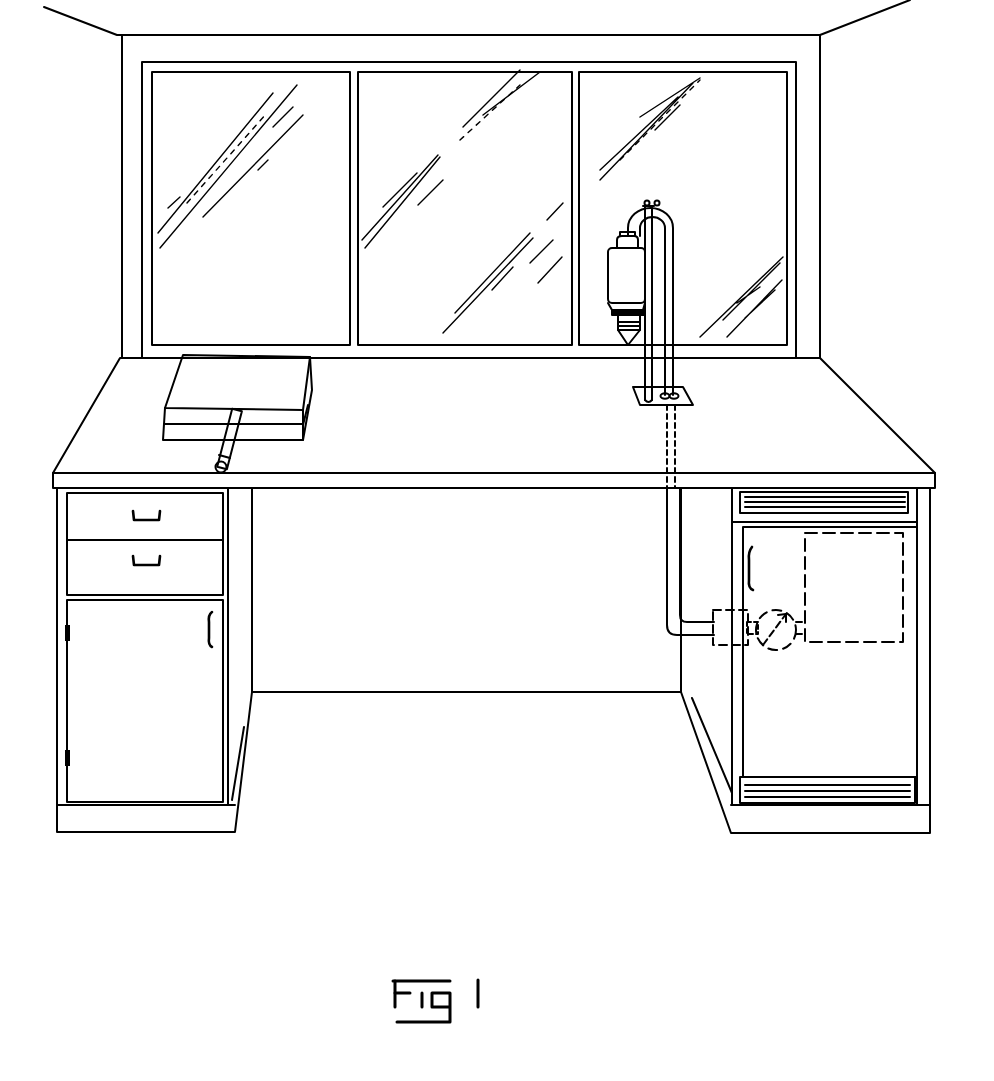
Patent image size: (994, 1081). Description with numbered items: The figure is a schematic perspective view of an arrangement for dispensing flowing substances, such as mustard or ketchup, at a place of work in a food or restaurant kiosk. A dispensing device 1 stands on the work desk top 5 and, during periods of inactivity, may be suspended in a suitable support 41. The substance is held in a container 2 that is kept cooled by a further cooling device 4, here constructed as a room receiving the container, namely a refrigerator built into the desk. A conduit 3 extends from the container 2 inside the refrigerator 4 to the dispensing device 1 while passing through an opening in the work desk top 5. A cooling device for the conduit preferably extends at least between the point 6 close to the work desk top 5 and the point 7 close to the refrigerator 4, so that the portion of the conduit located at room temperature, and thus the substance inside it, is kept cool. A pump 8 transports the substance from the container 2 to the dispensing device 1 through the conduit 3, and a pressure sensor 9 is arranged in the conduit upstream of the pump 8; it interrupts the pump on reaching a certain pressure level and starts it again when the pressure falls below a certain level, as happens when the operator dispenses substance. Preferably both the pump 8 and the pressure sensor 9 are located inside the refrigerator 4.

The dispensing device 1 is at (622, 284).
The container 2 is at (855, 641).
The conduit 3 is at (667, 571).
The cooling device 4 is at (494, 606).
The support 41 is at (650, 368).
The work desk top 5 is at (467, 457).
The point close to the work desk top 6 is at (668, 406).
The point close to the refrigerator 7 is at (718, 648).
The pump 8 is at (778, 650).
The pressure sensor 9 is at (717, 608).